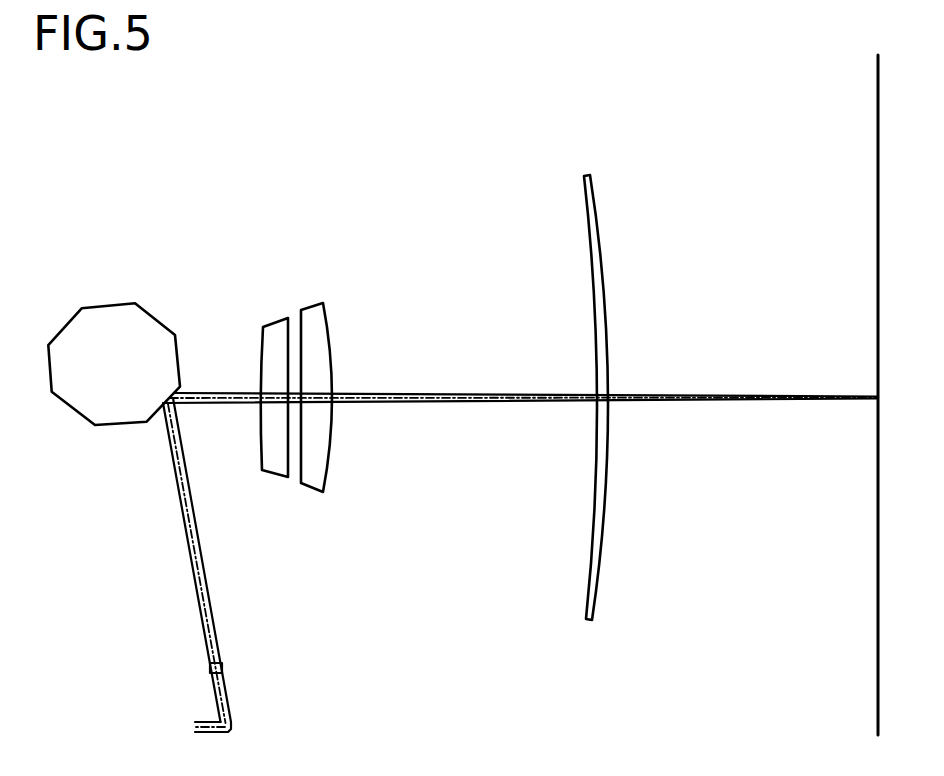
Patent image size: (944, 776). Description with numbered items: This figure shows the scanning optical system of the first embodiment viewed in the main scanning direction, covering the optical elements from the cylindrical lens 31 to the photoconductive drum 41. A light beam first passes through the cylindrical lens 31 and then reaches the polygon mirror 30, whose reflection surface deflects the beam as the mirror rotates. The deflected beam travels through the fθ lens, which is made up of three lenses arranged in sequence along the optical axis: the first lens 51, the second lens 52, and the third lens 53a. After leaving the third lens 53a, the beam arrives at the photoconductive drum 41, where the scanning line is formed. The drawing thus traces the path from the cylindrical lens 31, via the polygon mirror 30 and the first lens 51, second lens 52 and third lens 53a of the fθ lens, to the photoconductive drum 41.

The polygon mirror 30 is at (98, 427).
The cylindrical lens 31 is at (222, 668).
The first lens 51 is at (271, 470).
The second lens 52 is at (312, 482).
The third lens 53a is at (590, 568).
The photoconductive drum 41 is at (877, 677).